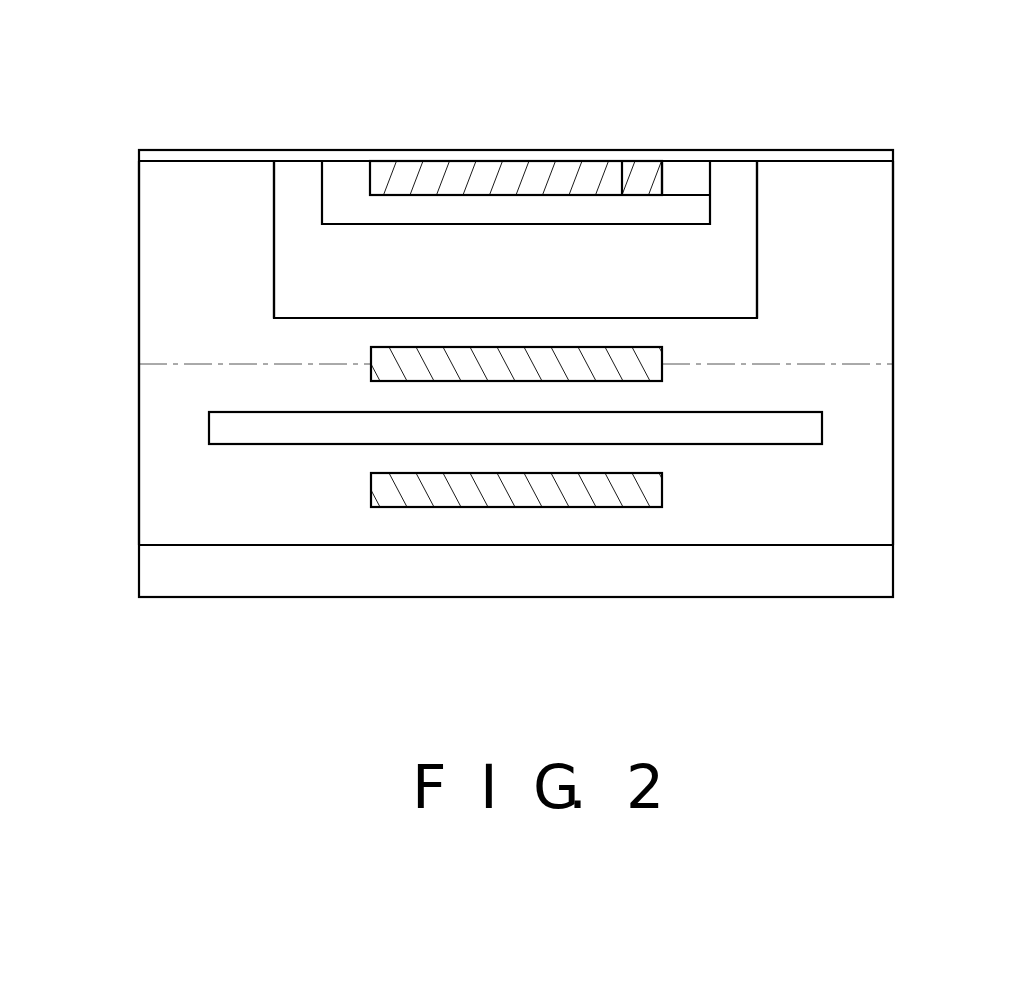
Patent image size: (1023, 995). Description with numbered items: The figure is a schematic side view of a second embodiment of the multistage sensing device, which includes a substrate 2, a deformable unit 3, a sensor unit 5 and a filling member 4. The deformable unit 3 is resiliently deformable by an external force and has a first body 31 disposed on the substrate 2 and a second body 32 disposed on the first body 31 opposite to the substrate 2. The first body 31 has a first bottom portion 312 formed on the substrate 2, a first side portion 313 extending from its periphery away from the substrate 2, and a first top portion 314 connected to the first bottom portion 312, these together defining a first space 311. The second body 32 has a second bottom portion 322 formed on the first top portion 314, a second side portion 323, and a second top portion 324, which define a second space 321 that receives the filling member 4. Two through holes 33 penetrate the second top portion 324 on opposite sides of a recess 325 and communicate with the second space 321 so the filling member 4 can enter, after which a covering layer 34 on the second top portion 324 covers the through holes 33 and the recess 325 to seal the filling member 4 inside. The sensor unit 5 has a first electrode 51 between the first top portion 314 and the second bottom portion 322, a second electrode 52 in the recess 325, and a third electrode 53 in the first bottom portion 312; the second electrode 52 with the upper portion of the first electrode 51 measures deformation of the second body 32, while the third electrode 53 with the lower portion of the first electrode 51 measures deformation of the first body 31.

The substrate 2 is at (868, 577).
The deformable unit 3 is at (119, 152).
The filling member 4 is at (325, 265).
The sensor unit 5 is at (606, 517).
The first body 31 is at (136, 462).
The second body 32 is at (136, 278).
The through hole 33 is at (292, 202).
The covering layer 34 is at (827, 155).
The first electrode 51 is at (398, 371).
The second electrode 52 is at (510, 178).
The third electrode 53 is at (401, 489).
The first space 311 is at (226, 424).
The first bottom portion 312 is at (848, 508).
The first side portion 313 is at (866, 413).
The first top portion 314 is at (738, 379).
The second space 321 is at (403, 250).
The second bottom portion 322 is at (812, 311).
The second side portion 323 is at (828, 243).
The second top portion 324 is at (672, 192).
The recess 325 is at (622, 190).